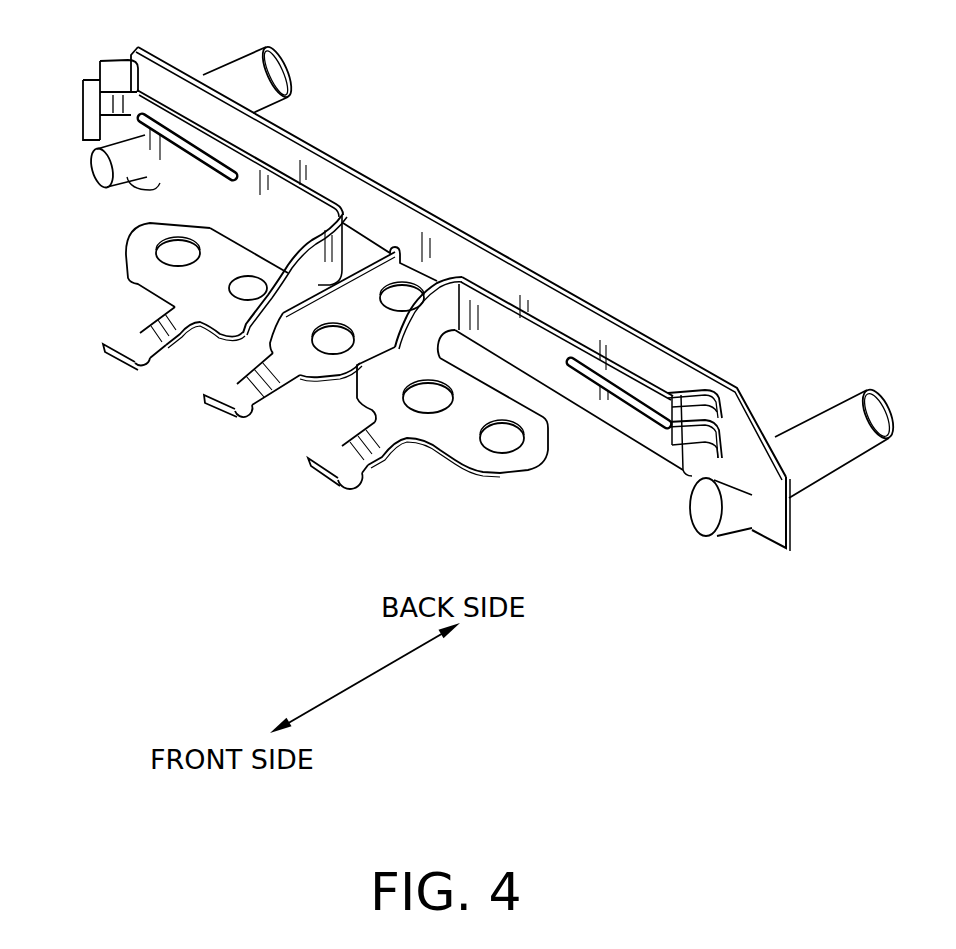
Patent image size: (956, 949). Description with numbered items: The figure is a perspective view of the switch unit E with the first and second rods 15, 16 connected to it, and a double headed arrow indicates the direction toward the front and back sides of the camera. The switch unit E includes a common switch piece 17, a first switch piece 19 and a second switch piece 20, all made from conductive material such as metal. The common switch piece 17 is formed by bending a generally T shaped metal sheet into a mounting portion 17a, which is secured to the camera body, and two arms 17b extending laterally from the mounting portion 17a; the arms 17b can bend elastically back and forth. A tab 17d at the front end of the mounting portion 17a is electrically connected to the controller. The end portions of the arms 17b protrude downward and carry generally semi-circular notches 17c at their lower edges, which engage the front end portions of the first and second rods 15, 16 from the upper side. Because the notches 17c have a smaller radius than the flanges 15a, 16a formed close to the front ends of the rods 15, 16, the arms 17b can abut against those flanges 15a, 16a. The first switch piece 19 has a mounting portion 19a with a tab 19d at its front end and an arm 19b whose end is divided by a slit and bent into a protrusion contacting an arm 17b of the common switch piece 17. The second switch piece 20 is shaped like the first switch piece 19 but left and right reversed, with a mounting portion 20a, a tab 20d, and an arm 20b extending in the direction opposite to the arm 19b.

The first rod 15 is at (852, 413).
The flange 15a is at (732, 527).
The second rod 16 is at (250, 62).
The flange 16a is at (133, 185).
The common switch piece 17 is at (447, 223).
The mounting portion 17a is at (307, 362).
The arm 17b is at (397, 167).
The semi-circular notch 17c is at (110, 135).
The tab 17d is at (245, 417).
The first switch piece 19 is at (527, 310).
The mounting portion 19a is at (477, 447).
The arm 19b is at (547, 363).
The tab 19d is at (350, 485).
The second switch piece 20 is at (313, 183).
The mounting portion 20a is at (143, 267).
The arm 20b is at (260, 185).
The tab 20d is at (150, 360).
The switch unit E is at (533, 163).